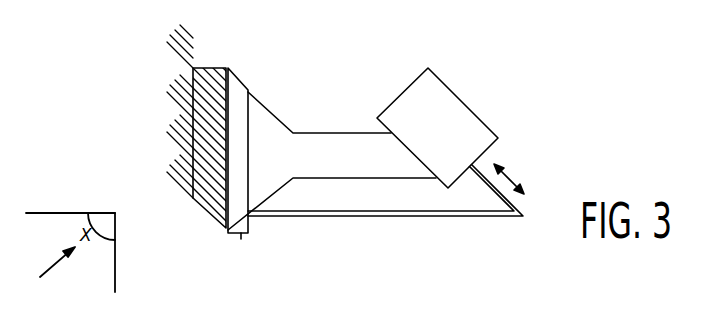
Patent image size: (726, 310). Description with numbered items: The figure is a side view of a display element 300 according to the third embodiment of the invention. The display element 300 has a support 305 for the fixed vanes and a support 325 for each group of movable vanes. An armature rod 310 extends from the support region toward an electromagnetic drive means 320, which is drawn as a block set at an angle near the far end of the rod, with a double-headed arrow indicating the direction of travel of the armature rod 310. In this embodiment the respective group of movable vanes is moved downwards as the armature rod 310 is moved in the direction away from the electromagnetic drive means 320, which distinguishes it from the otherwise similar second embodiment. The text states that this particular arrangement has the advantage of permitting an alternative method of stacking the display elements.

The display element 300 is at (580, 123).
The support 305 is at (266, 127).
The armature rod 310 is at (494, 190).
The electromagnetic drive means 320 is at (448, 103).
The support 325 is at (241, 236).